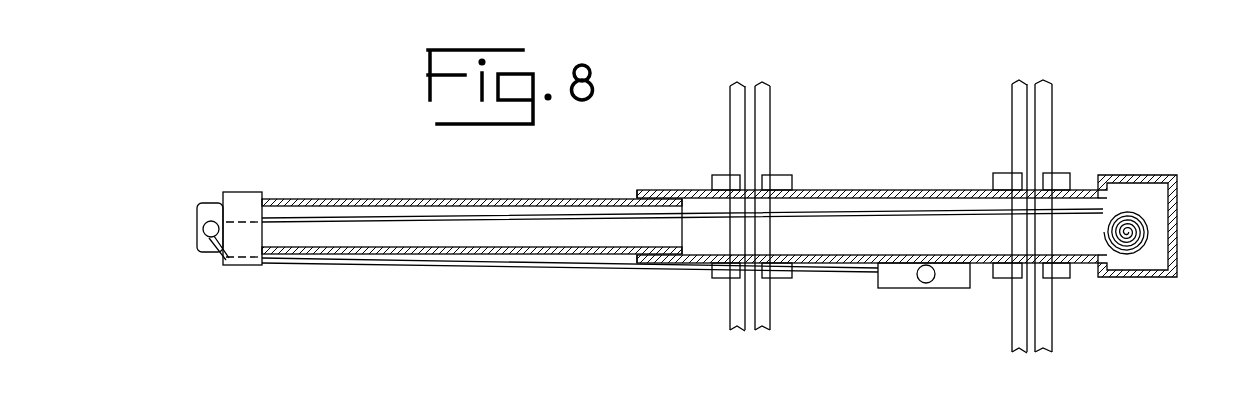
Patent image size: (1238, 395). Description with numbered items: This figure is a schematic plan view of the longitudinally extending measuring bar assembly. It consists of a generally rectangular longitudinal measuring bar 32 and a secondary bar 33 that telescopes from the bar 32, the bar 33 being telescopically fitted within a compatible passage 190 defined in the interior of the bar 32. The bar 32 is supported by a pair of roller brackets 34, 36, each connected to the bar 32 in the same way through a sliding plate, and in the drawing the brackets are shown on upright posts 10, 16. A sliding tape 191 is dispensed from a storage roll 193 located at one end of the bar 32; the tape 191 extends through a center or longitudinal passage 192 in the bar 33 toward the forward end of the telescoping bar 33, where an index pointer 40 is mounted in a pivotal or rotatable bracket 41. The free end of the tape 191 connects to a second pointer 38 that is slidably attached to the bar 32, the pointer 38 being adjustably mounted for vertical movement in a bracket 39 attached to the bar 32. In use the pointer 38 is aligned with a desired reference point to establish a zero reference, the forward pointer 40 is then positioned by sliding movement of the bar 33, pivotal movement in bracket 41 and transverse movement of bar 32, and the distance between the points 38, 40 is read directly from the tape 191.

The post 10 is at (1052, 100).
The post 16 is at (772, 103).
The longitudinal measuring bar 32 is at (918, 168).
The secondary bar 33 is at (543, 201).
The roller bracket 34 is at (792, 177).
The roller bracket 36 is at (1065, 173).
The second pointer 38 is at (922, 281).
The bracket 39 is at (952, 284).
The index pointer 40 is at (203, 231).
The pivotal bracket 41 is at (208, 203).
The passage 190 is at (913, 204).
The sliding tape 191 is at (480, 264).
The longitudinal passage 192 is at (313, 206).
The storage roll 193 is at (1145, 215).